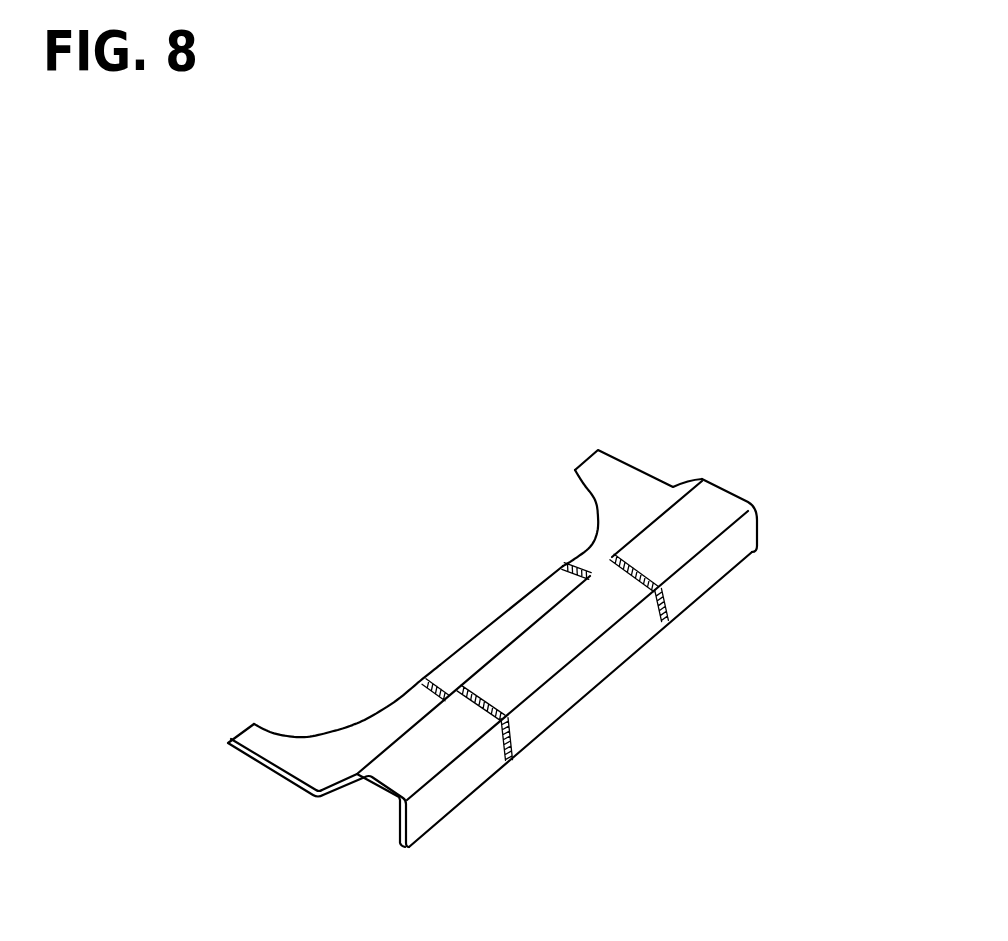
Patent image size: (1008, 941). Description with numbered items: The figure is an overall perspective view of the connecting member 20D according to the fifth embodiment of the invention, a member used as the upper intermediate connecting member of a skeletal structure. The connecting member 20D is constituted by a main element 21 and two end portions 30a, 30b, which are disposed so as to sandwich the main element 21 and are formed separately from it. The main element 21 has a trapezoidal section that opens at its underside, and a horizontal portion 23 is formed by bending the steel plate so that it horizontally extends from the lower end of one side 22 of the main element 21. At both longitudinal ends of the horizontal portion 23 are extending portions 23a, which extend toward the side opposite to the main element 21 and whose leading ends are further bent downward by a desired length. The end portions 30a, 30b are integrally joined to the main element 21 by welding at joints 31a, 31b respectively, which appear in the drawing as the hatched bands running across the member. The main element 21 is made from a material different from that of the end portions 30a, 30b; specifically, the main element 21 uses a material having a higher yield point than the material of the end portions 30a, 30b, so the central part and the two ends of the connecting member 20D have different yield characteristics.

The connecting member 20D is at (748, 489).
The main element 21 is at (605, 642).
The side of the main element 22 is at (472, 659).
The horizontal portion 23 is at (332, 744).
The extending portions 23a is at (598, 464).
The end portion 30a is at (475, 772).
The end portion 30b is at (740, 542).
The joint 31a is at (510, 760).
The joint 31b is at (666, 621).